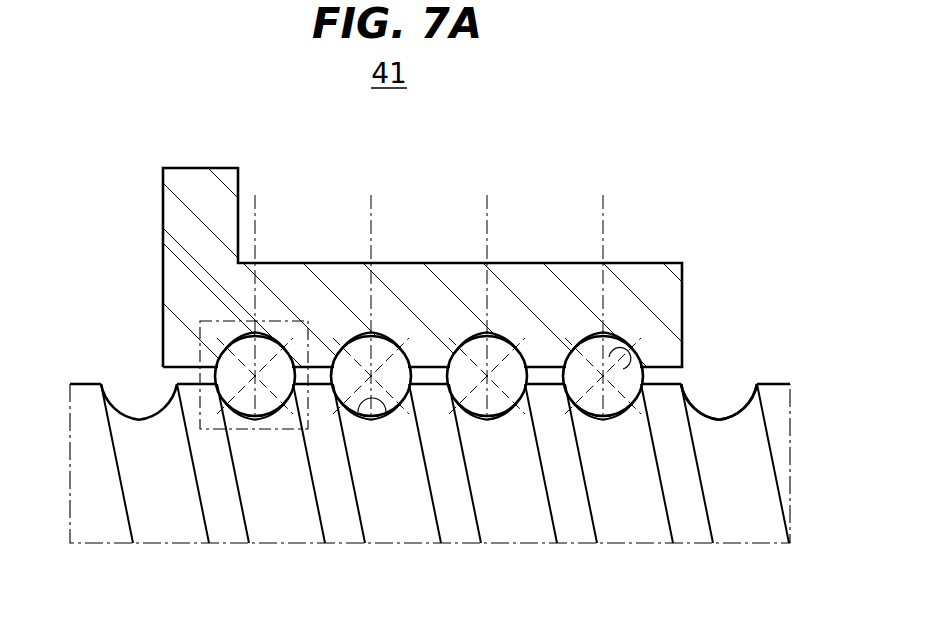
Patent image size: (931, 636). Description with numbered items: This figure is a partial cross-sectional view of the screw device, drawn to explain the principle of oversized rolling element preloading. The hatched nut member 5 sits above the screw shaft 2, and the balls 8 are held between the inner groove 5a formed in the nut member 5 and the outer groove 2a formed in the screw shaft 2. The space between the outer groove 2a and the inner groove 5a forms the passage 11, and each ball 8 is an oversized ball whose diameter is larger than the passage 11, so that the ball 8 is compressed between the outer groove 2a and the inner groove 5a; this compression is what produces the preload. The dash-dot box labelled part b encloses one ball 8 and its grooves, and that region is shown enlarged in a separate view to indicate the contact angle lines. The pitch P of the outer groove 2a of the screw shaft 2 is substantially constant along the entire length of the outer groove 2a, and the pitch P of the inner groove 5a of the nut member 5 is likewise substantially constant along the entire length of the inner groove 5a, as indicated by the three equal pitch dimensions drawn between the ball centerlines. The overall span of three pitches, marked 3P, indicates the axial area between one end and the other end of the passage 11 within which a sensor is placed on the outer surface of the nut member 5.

The nut member 5 is at (648, 260).
The inner groove 5a is at (614, 358).
The screw shaft 2 is at (782, 379).
The outer groove 2a is at (712, 406).
The ball 8 is at (236, 374).
The passage 11 is at (391, 412).
The part b is at (247, 328).
The pitch P is at (487, 247).
The area of three pitches 3P is at (255, 202).